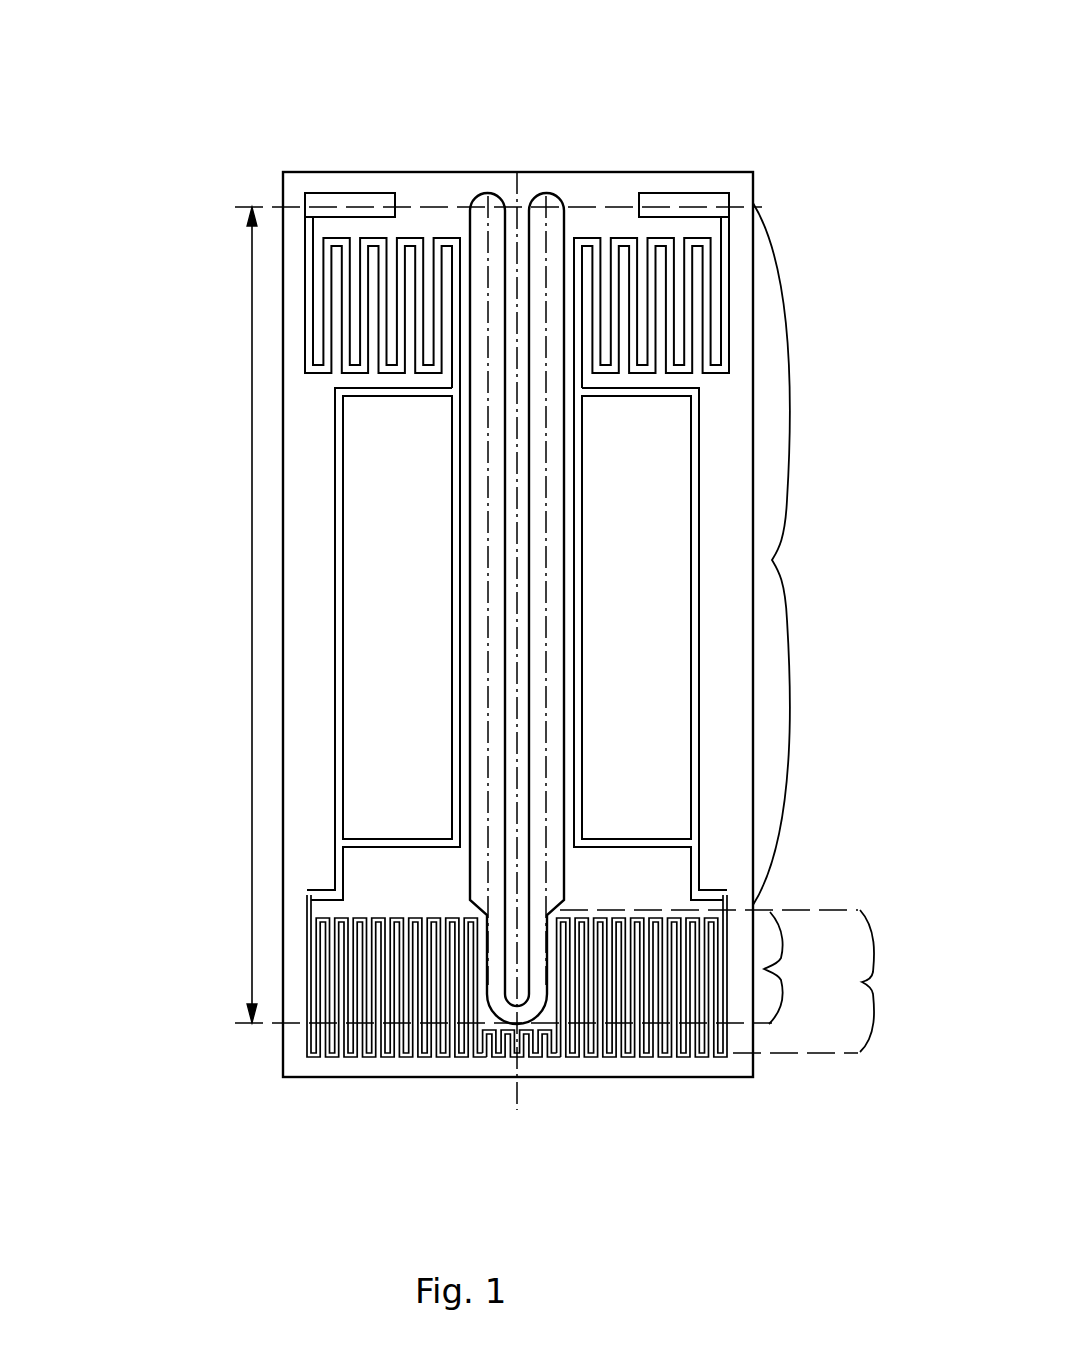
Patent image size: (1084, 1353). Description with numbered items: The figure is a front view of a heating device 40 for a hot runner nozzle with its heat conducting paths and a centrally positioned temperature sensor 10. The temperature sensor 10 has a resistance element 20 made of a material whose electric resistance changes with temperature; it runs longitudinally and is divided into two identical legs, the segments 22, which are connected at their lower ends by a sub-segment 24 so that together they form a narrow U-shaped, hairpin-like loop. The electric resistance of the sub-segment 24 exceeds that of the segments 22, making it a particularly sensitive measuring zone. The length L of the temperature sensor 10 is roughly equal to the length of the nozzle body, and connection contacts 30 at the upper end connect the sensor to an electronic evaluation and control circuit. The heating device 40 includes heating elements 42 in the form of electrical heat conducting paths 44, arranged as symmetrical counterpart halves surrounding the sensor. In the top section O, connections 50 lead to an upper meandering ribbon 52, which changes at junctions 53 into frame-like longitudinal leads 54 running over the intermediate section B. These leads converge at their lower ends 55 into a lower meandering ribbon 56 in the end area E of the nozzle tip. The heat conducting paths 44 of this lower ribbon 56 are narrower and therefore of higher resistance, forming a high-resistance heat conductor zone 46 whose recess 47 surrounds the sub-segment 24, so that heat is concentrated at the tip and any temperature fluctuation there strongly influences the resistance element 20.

The temperature sensor 10 is at (588, 49).
The resistance element 20 is at (349, 539).
The segment 22 is at (795, 554).
The sub-segment 24 is at (546, 967).
The connection contact 30 is at (543, 195).
The heating device 40 is at (185, 487).
The heating element 42 is at (368, 326).
The heat conducting path 44 is at (412, 994).
The high-resistance heat conductor zone 46 is at (830, 981).
The recess 47 is at (548, 1012).
The connections 50 is at (352, 205).
The meandering ribbon 52 is at (683, 300).
The junction 53 is at (455, 394).
The longitudinal lead 54 is at (470, 612).
The lower end 55 is at (343, 838).
The meandering ribbon 56 is at (653, 1060).
The top section O is at (292, 262).
The end area E is at (292, 1044).
The length L is at (252, 620).
The intermediate section B is at (320, 700).